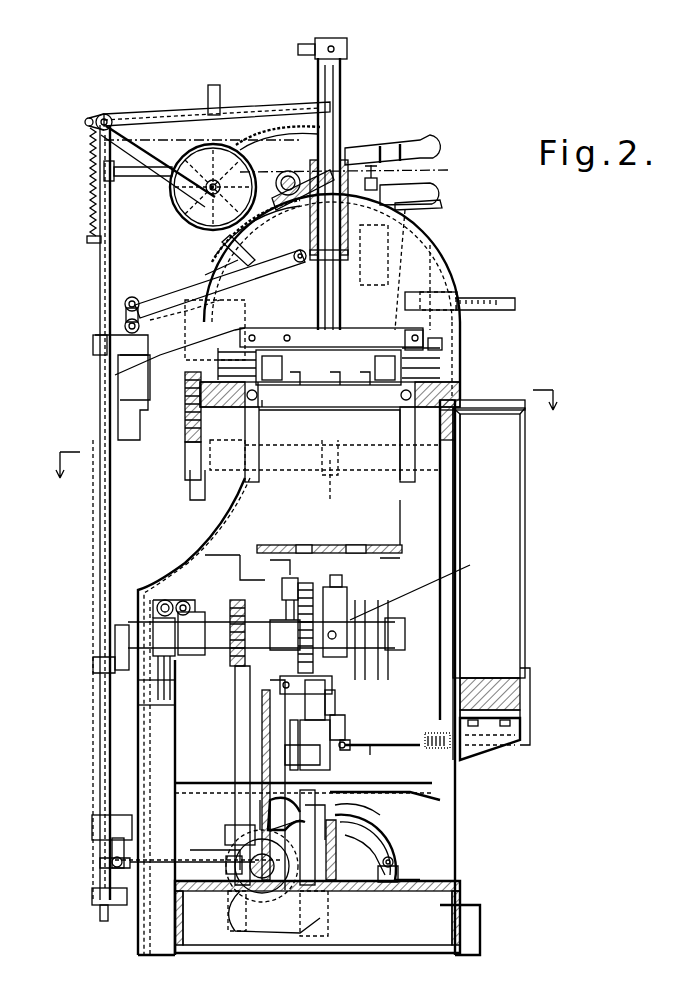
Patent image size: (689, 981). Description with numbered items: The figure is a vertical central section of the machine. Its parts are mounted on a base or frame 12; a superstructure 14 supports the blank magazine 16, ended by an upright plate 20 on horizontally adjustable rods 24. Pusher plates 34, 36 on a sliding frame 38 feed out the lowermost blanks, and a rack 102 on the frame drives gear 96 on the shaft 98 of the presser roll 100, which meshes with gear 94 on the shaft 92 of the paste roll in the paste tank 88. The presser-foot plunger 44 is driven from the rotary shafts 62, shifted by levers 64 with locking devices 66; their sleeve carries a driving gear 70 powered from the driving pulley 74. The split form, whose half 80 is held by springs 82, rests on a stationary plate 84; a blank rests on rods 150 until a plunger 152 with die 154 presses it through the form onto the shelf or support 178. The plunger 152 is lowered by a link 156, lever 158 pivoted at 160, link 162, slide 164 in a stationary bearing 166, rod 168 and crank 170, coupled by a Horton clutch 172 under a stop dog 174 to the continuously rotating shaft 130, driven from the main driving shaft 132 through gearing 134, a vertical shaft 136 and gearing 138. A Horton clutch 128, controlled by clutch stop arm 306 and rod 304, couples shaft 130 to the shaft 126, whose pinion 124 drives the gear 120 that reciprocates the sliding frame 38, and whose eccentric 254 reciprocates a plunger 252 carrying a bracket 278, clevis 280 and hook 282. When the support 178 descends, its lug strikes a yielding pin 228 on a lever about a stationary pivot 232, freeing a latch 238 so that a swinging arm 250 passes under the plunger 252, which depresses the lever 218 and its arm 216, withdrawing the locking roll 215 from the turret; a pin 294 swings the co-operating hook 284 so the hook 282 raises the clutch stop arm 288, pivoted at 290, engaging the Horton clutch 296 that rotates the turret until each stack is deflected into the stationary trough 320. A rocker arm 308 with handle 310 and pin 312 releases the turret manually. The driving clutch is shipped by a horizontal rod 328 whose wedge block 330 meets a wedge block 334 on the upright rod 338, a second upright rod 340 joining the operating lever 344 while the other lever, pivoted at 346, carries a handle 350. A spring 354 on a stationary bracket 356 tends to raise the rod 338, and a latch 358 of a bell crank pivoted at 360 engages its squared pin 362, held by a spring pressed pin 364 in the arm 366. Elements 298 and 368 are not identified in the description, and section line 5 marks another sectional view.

The base or frame 12 is at (175, 534).
The superstructure 14 is at (422, 224).
The blank magazine 16 is at (444, 280).
The upright plate 20 is at (420, 268).
The horizontally adjustable rod 24 is at (160, 296).
The pusher plate 34 is at (465, 402).
The pusher plate 36 is at (330, 394).
The sliding frame 38 is at (456, 380).
The plunger 44 is at (340, 80).
The horizontal rotary shaft 62 is at (294, 171).
The manually operable lever 64 is at (435, 176).
The locking device 66 is at (445, 203).
The driving gear 70 is at (288, 172).
The driving pulley 74 is at (180, 205).
The form half 80 is at (300, 410).
The spring 82 is at (260, 407).
The plate 84 is at (387, 446).
The paste tank 88 is at (312, 450).
The shaft 92 is at (185, 415).
The gear 94 is at (200, 480).
The gear 96 is at (178, 332).
The shaft 98 is at (135, 375).
The presser roll 100 is at (440, 340).
The rack 102 is at (188, 455).
The gear 120 is at (313, 580).
The pinion 124 is at (314, 574).
The shaft 126 is at (98, 641).
The Horton clutch 128 is at (258, 560).
The continuously rotating shaft 130 is at (232, 600).
The main driving shaft 132 is at (290, 920).
The gearing 134 is at (226, 832).
The vertical shaft 136 is at (230, 783).
The gearing 138 is at (235, 688).
The rod 150 is at (348, 408).
The plunger 152 is at (344, 128).
The die 154 is at (329, 366).
The link 156 is at (346, 254).
The lever 158 is at (206, 268).
The pivot 160 is at (225, 245).
The link 162 is at (124, 308).
The slide 164 is at (126, 420).
The stationary bearing 166 is at (118, 362).
The rod 168 is at (97, 529).
The crank 170 is at (130, 690).
The Horton clutch 172 is at (186, 612).
The stop dog 174 is at (310, 382).
The shelf or support 178 is at (354, 545).
The locking roll 215 is at (358, 808).
The arm 216 is at (330, 840).
The lever 218 is at (315, 890).
The yielding pin 228 is at (270, 715).
The stationary pivot 232 is at (440, 748).
The latch 238 is at (262, 700).
The swinging arm 250 is at (395, 822).
The plunger 252 is at (330, 684).
The eccentric 254 is at (422, 618).
The bracket 278 is at (335, 700).
The clevis 280 is at (290, 730).
The hook 282 is at (290, 755).
The co-operating hook 284 is at (336, 882).
The clutch stop arm 288 is at (440, 805).
The pivot 290 is at (398, 868).
The pin 294 is at (380, 842).
The Horton clutch 296 is at (330, 812).
The bracket 298 is at (282, 600).
The rod 304 is at (345, 742).
The clutch stop arm 306 is at (294, 580).
The rocker arm 308 is at (400, 745).
The handle 310 is at (523, 690).
The pin 312 is at (345, 722).
The stationary trough 320 is at (517, 625).
The horizontal rod 328 is at (112, 850).
The wedge block 330 is at (100, 870).
The wedge block 334 is at (92, 895).
The upright rod 338 is at (100, 262).
The upright rod 340 is at (280, 860).
The operating lever 344 is at (410, 172).
The pivot 346 is at (212, 148).
The handle 350 is at (430, 140).
The spring 354 is at (88, 196).
The stationary bracket 356 is at (130, 118).
The latch 358 is at (89, 130).
The pivot 360 is at (96, 116).
The squared pin 362 is at (125, 176).
The spring pressed pin 364 is at (243, 140).
The arm 366 is at (182, 110).
The head 368 is at (300, 48).
The section line 5 is at (306, 442).